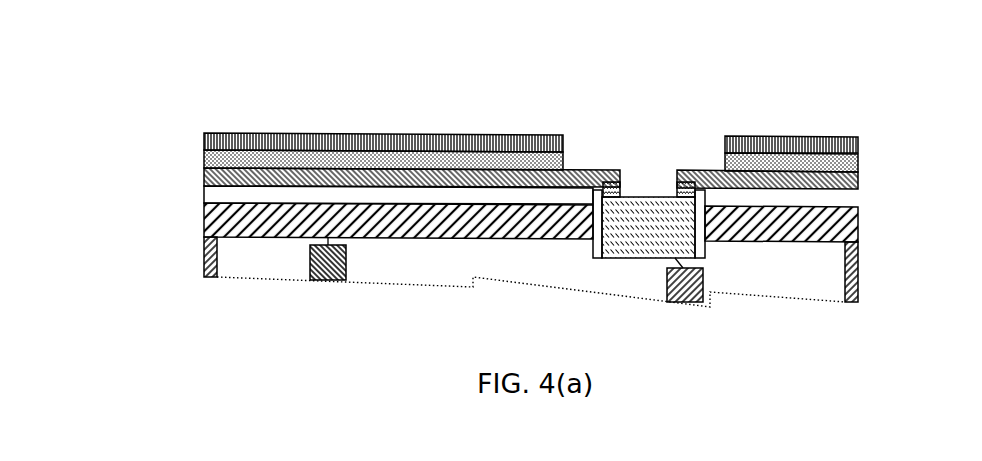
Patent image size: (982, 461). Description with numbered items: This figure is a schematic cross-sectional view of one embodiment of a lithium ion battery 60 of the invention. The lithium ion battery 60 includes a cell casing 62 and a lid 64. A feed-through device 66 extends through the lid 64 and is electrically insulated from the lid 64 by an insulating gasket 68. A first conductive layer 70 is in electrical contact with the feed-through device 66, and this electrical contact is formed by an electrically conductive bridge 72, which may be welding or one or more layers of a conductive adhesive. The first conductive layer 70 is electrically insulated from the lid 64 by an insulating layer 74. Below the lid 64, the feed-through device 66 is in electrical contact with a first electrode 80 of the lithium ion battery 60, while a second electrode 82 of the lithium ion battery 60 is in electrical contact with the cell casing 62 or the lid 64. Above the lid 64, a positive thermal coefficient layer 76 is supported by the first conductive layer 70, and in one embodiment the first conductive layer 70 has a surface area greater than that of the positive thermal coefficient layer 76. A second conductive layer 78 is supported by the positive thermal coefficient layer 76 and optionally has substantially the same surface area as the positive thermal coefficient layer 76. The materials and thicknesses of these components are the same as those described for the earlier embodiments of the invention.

The lithium ion battery 60 is at (156, 115).
The cell casing 62 is at (857, 260).
The lid 64 is at (207, 228).
The feed-through device 66 is at (648, 238).
The insulating gasket 68 is at (697, 247).
The first conductive layer 70 is at (715, 174).
The electrically conductive bridge 72 is at (683, 182).
The insulating layer 74 is at (232, 194).
The positive thermal coefficient layer 76 is at (423, 158).
The second conductive layer 78 is at (260, 133).
The first electrode 80 is at (687, 302).
The second electrode 82 is at (333, 263).